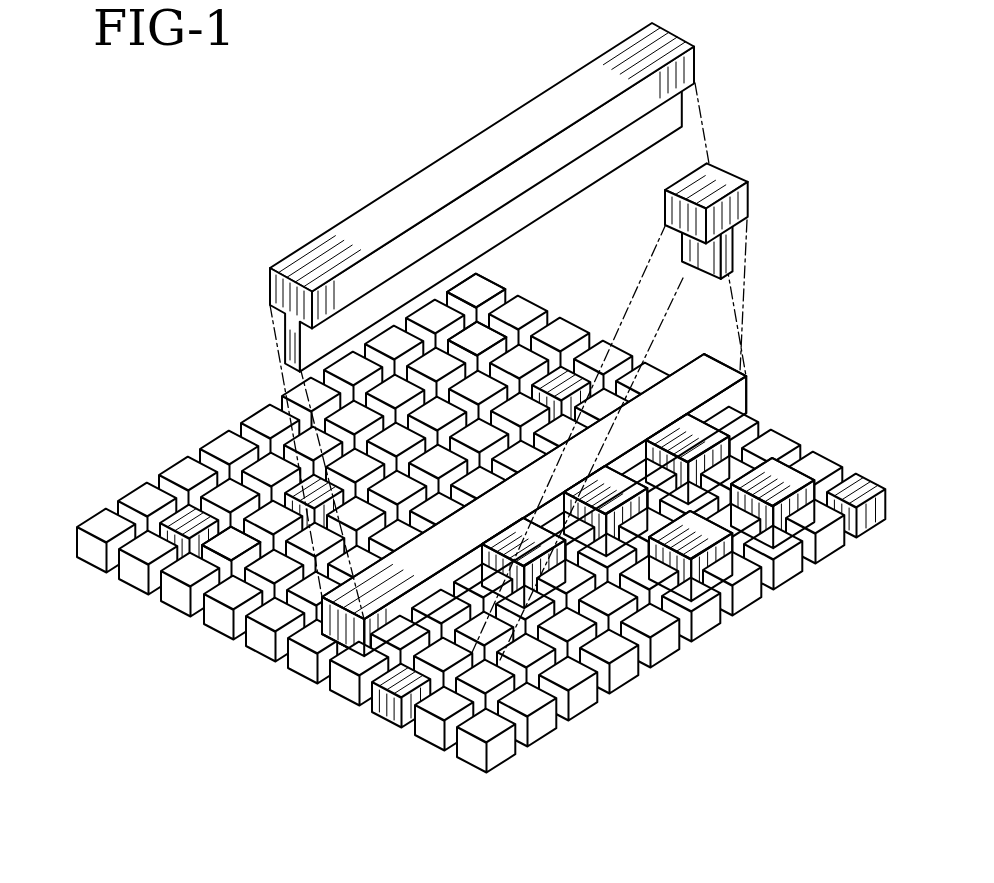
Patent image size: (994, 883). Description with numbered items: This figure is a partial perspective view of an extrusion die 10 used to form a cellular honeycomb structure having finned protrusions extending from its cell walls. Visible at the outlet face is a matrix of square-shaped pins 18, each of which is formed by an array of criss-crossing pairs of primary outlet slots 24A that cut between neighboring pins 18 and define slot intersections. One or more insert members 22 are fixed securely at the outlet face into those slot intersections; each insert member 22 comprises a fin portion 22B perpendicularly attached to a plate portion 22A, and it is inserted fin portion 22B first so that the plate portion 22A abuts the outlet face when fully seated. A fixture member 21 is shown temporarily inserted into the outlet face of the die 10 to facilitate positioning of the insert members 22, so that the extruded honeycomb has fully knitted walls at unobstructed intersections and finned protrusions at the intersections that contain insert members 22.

The extrusion die 10 is at (142, 440).
The square-shaped pins 18 is at (521, 310).
The fixture member 21 is at (398, 177).
The insert member 22 is at (772, 177).
The plate portion 22A is at (716, 186).
The fin portion 22B is at (732, 256).
The outlet slots 24A is at (668, 600).